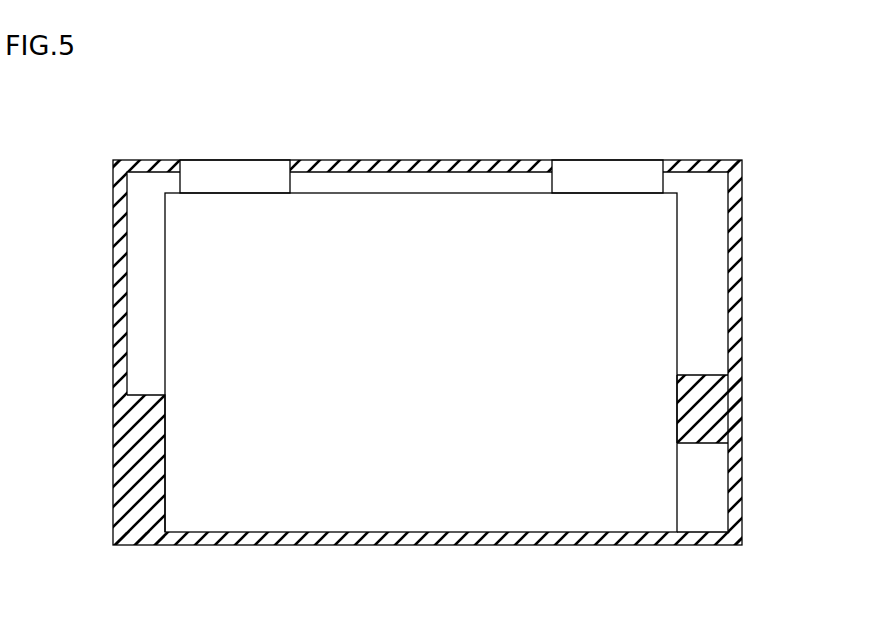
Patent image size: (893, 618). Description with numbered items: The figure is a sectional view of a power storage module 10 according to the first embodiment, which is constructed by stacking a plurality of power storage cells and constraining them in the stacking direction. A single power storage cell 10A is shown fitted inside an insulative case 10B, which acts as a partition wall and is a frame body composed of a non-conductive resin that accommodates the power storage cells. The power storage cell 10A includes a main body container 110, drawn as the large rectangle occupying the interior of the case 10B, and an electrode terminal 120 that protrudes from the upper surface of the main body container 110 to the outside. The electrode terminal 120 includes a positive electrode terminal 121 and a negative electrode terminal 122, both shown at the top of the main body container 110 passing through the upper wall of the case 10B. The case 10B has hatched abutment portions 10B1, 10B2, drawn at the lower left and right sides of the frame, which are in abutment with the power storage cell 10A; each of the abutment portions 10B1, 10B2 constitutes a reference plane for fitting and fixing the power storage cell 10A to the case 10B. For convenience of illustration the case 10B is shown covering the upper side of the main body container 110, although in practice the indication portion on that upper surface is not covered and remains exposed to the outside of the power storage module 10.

The power storage module 10 is at (104, 132).
The power storage cell 10A is at (697, 198).
The case 10B is at (737, 248).
The abutment portion 10B1 is at (140, 468).
The abutment portion 10B2 is at (712, 409).
The main body container 110 is at (156, 269).
The electrode terminal 120 is at (213, 118).
The positive electrode terminal 121 is at (237, 171).
The negative electrode terminal 122 is at (605, 173).